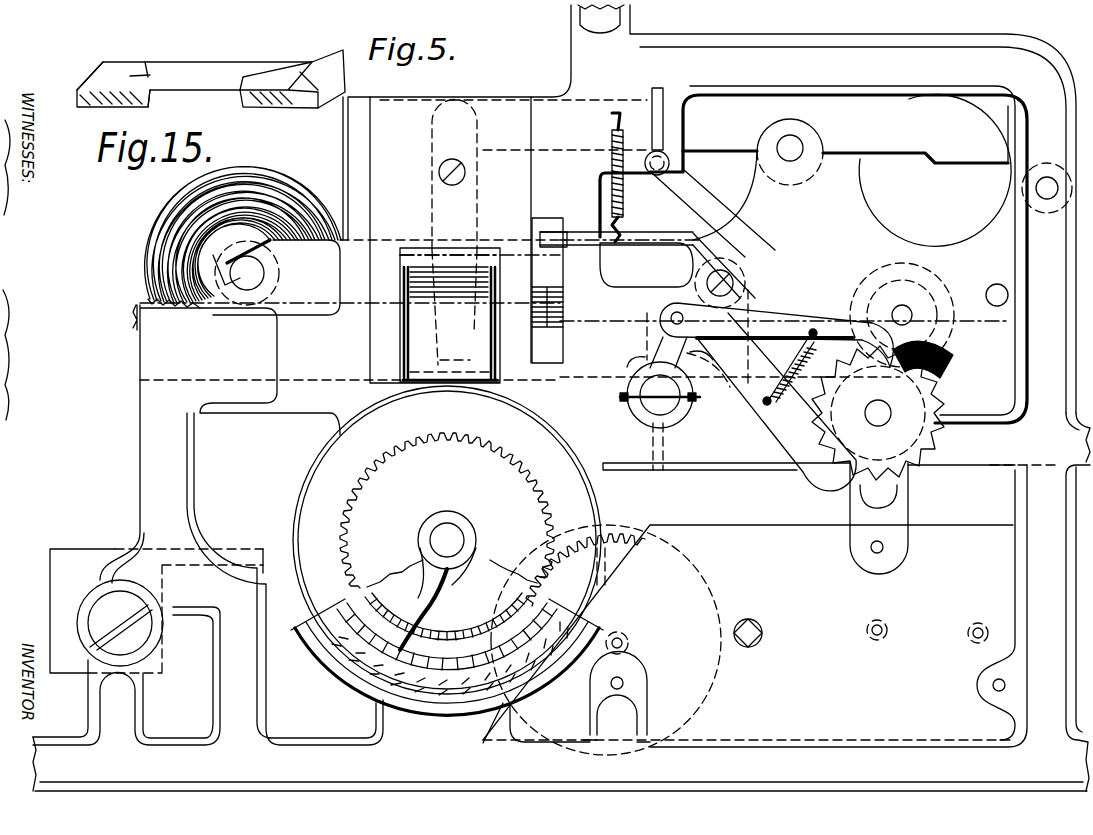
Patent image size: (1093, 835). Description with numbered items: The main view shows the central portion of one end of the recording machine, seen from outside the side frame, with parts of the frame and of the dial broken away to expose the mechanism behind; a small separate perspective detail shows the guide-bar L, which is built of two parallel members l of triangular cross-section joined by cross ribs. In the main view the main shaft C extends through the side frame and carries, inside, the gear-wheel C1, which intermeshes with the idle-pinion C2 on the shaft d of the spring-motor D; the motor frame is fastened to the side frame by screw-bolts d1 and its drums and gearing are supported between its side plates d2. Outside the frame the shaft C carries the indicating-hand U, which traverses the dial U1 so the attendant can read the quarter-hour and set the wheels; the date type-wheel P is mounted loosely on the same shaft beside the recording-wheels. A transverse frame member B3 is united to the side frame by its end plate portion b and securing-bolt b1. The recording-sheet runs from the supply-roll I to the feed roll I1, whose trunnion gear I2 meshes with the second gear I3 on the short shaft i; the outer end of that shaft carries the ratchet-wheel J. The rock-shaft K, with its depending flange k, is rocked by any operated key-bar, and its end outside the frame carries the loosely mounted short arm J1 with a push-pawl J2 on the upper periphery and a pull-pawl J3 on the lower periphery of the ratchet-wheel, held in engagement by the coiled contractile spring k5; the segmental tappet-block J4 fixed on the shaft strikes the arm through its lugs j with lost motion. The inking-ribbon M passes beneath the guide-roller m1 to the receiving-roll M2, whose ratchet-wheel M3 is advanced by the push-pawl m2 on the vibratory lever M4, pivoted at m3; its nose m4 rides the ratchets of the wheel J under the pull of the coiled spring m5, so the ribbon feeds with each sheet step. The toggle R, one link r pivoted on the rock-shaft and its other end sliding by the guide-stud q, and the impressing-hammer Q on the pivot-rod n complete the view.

In FIG. 5, the parallel member l is at (240, 62).
In FIG. 5, the guide-bar L is at (240, 92).
In FIG. 15, the supply-roll I is at (225, 178).
In FIG. 15, the receiving or feed roll I1 is at (950, 348).
In FIG. 15, the gear I2 is at (940, 368).
In FIG. 15, the second gear I3 is at (943, 398).
In FIG. 15, the short shaft i is at (880, 426).
In FIG. 15, the inking-ribbon M is at (450, 315).
In FIG. 15, the receiving-roll M2 is at (405, 330).
In FIG. 15, the ratchet-wheel M3 is at (547, 290).
In FIG. 15, the vibratory lever M4 is at (632, 240).
In FIG. 15, the guide-roller m1 is at (420, 385).
In FIG. 15, the push-pawl m2 is at (560, 268).
In FIG. 15, the pivot m3 is at (737, 278).
In FIG. 15, the wiper or nose m4 is at (868, 305).
In FIG. 15, the coiled spring m5 is at (610, 175).
In FIG. 15, the toggle R is at (672, 185).
In FIG. 15, the link r is at (713, 213).
In FIG. 15, the guide-stud q is at (672, 160).
In FIG. 15, the pivot-rod n is at (780, 145).
In FIG. 15, the impressing-hammer Q is at (934, 170).
In FIG. 15, the lugs or projections j is at (625, 340).
In FIG. 15, the ratchet-wheel J is at (915, 430).
In FIG. 15, the short arm J1 is at (660, 318).
In FIG. 15, the push-pawl J2 is at (842, 330).
In FIG. 15, the pull-pawl J3 is at (780, 440).
In FIG. 15, the segmental-shaped tappet-block J4 is at (640, 365).
In FIG. 15, the radially-extending flange k is at (665, 438).
In FIG. 15, the spring k5 is at (789, 371).
In FIG. 15, the rock-shaft K is at (628, 410).
In FIG. 15, the type-wheel P is at (447, 540).
In FIG. 15, the main shaft C is at (458, 522).
In FIG. 15, the gear-wheel C1 is at (532, 525).
In FIG. 15, the idle-pinion C2 is at (585, 570).
In FIG. 15, the indicating-hand U is at (440, 582).
In FIG. 15, the dial U1 is at (447, 637).
In FIG. 15, the transverse frame member B3 is at (70, 549).
In FIG. 15, the end plate portion b is at (110, 623).
In FIG. 15, the securing-bolt b1 is at (92, 648).
In FIG. 15, the spring-motor D is at (748, 640).
In FIG. 15, the shaft d is at (628, 641).
In FIG. 15, the screw-bolt d1 is at (625, 686).
In FIG. 15, the side frame members or plates d2 is at (695, 532).